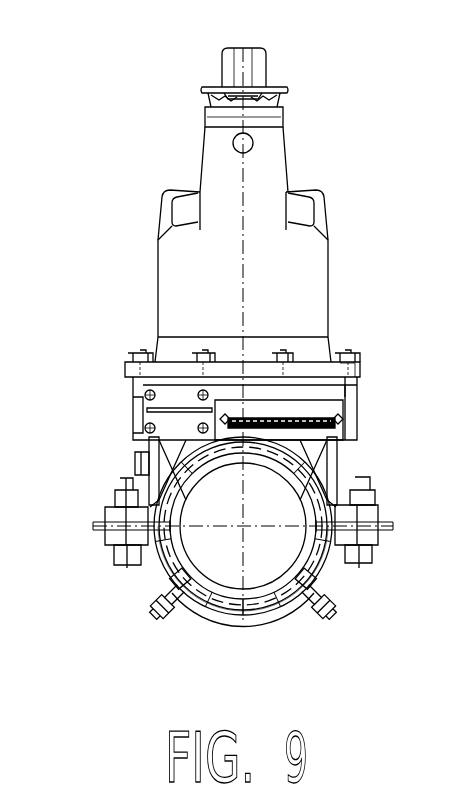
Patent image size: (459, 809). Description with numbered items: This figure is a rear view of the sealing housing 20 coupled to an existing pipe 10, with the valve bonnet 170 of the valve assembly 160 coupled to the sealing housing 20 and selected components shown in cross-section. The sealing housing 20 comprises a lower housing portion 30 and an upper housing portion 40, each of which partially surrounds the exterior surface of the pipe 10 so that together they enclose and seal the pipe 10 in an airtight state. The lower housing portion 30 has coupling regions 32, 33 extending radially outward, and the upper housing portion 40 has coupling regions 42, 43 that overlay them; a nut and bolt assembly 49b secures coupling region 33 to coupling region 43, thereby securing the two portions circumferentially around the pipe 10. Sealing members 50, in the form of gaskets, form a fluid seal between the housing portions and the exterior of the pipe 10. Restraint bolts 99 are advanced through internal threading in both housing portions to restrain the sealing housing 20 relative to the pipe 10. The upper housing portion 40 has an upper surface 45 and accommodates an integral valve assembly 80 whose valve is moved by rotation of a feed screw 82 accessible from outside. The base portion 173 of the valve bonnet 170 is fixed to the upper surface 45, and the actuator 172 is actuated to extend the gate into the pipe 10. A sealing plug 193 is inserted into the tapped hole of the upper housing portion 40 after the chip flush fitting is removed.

The actuator 172 is at (255, 65).
The valve assembly 160 is at (195, 147).
The valve bonnet 170 is at (313, 258).
The upper surface 45 is at (127, 378).
The base portion 173 is at (362, 367).
The integral valve assembly 80 is at (355, 395).
The feed screw 82 is at (243, 410).
The sealing plug 193 is at (132, 462).
The upper housing portion 40 is at (340, 473).
The nut and bolt assembly 49b is at (112, 493).
The coupling region 43 is at (107, 517).
The coupling region 33 is at (107, 540).
The coupling region 42 is at (377, 512).
The coupling region 32 is at (378, 540).
The existing pipe 10 is at (207, 593).
The sealing members 50 is at (260, 610).
The lower housing portion 30 is at (155, 572).
The restraint bolts 99 is at (148, 615).
The sealing housing 20 is at (333, 577).